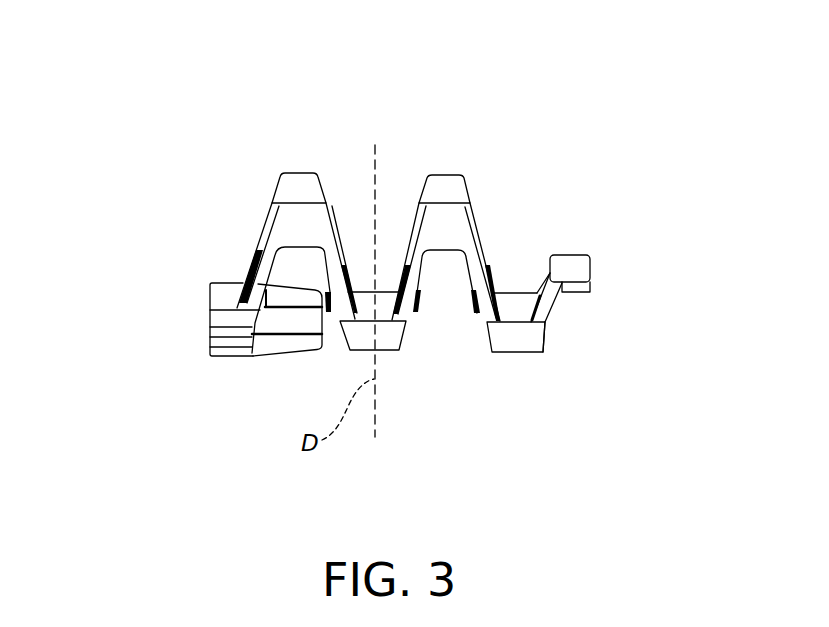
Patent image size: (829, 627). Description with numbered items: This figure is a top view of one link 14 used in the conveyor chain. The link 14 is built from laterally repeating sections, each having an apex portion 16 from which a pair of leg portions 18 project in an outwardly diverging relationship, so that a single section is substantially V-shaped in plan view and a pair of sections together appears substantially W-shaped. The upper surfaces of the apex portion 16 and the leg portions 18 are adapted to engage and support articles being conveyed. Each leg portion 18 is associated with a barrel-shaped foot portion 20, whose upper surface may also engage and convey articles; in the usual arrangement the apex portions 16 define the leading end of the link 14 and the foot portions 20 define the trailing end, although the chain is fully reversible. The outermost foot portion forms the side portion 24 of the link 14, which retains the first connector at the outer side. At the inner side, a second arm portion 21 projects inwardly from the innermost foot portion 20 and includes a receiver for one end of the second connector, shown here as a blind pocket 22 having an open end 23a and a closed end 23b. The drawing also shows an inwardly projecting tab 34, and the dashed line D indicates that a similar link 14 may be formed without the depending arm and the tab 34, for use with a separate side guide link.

The link 14 is at (451, 165).
The apex portion 16 is at (435, 176).
The leg portions 18 is at (404, 290).
The foot portion 20 is at (390, 345).
The second arm portion 21 is at (548, 306).
The blind pocket 22 is at (600, 271).
The open end 23a is at (590, 288).
The closed end 23b is at (548, 277).
The side portion 24 is at (193, 302).
The inwardly projecting tab 34 is at (288, 340).